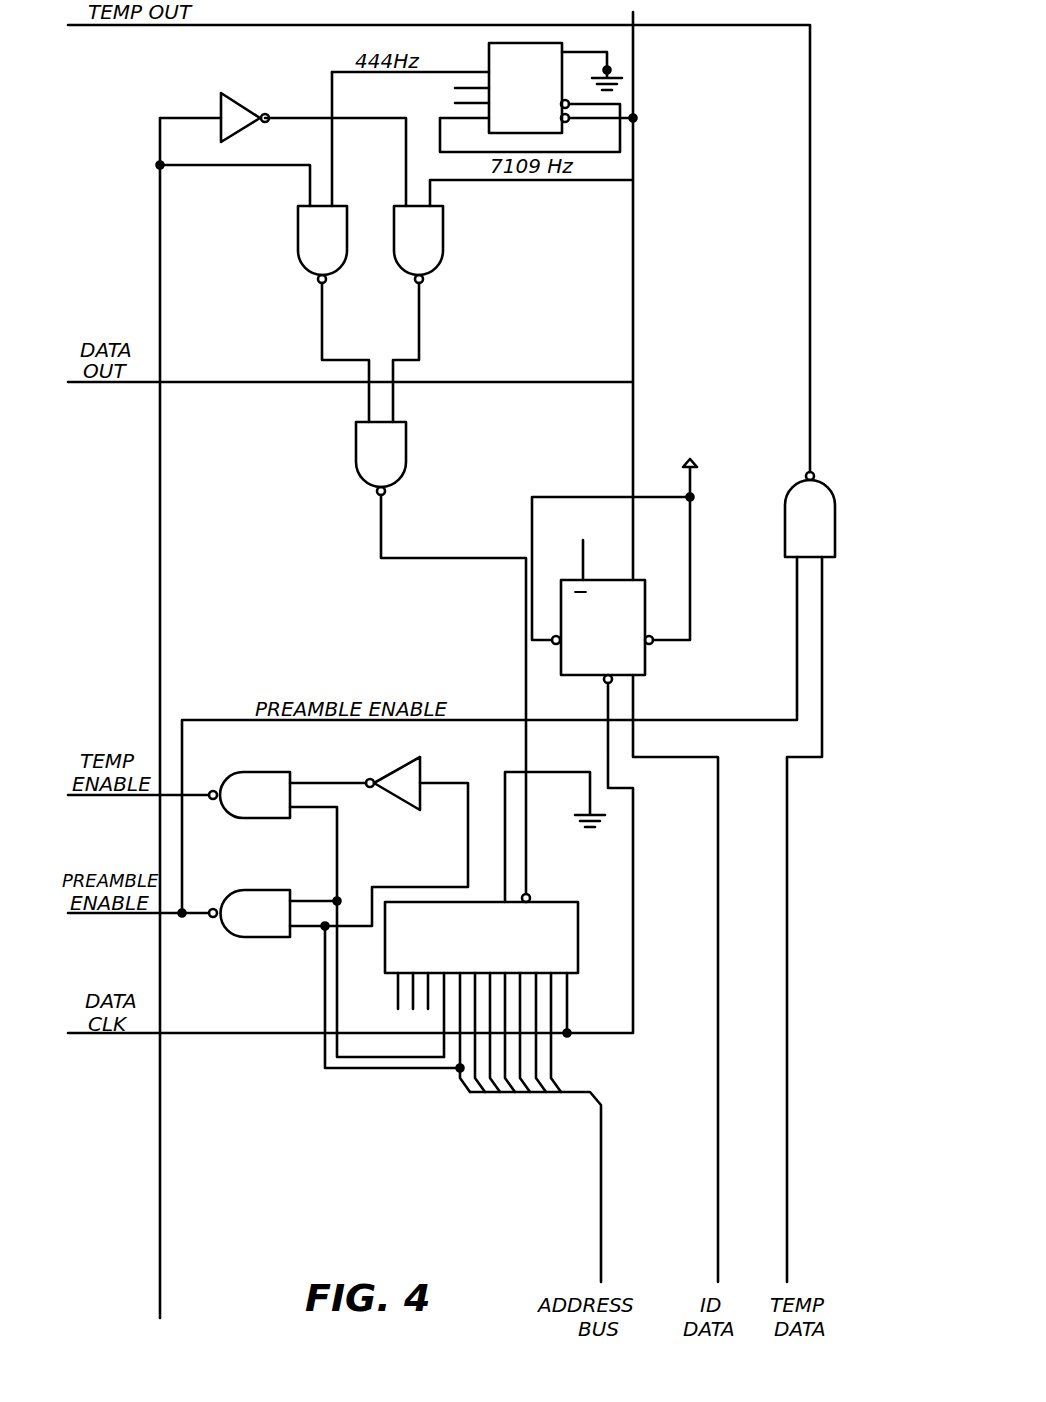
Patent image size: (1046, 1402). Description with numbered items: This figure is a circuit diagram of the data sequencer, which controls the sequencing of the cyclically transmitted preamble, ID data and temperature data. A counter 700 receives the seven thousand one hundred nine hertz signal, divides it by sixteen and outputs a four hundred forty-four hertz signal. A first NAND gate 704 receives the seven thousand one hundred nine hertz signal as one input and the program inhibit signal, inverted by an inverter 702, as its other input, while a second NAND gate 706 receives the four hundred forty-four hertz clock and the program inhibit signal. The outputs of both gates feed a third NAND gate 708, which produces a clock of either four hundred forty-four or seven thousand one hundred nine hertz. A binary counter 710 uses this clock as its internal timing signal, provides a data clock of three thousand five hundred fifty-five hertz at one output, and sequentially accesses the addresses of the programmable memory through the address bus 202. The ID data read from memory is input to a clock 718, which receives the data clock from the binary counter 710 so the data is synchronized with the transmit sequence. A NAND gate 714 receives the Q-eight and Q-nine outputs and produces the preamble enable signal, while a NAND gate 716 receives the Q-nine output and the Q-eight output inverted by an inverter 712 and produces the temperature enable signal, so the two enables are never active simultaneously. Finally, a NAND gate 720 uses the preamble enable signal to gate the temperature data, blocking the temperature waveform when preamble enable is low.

The counter 700 is at (563, 48).
The inverter 702 is at (248, 104).
The first NAND gate 704 is at (430, 250).
The second NAND gate 706 is at (336, 250).
The third NAND gate 708 is at (395, 468).
The binary counter 710 is at (578, 945).
The inverter 712 is at (395, 772).
The NAND gate 714 is at (274, 884).
The NAND gate 716 is at (268, 765).
The clock 718 is at (645, 668).
The NAND gate 720 is at (828, 505).
The address bus 202 is at (601, 1192).